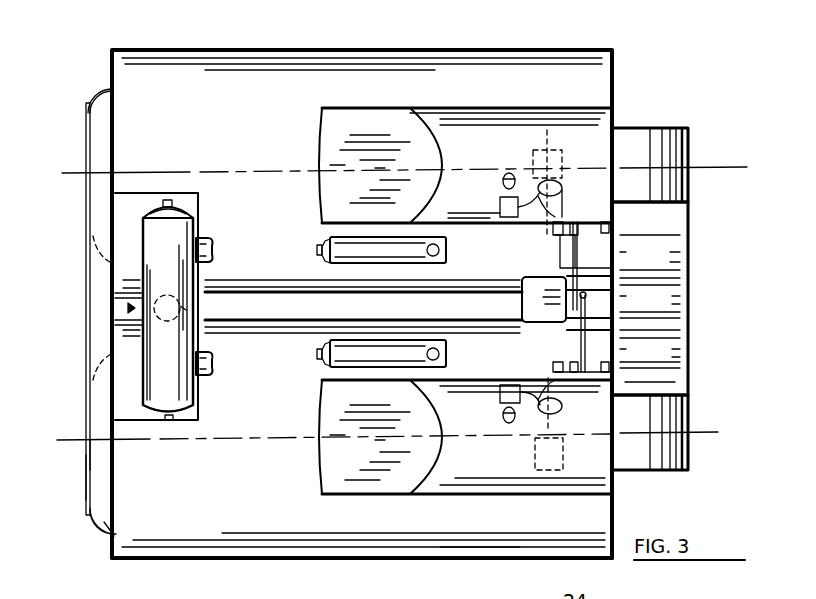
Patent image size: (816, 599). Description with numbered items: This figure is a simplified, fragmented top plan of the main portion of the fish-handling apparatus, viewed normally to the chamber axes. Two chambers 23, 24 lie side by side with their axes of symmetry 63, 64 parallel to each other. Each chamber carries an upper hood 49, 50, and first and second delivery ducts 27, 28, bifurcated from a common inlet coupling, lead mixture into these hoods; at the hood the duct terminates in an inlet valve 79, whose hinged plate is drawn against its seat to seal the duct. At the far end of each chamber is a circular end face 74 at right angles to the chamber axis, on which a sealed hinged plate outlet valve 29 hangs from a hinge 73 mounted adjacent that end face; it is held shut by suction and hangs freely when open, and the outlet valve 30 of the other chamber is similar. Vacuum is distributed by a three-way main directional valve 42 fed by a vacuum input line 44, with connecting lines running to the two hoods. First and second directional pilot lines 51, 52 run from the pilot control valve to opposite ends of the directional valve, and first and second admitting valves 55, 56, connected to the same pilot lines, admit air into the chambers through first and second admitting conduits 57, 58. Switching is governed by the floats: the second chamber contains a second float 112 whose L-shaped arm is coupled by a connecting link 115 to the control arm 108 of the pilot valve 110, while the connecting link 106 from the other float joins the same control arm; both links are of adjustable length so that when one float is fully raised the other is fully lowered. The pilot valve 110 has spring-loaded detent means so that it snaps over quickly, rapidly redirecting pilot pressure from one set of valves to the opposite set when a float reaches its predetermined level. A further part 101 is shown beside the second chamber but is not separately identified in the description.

The first chamber 23 is at (355, 545).
The second chamber 24 is at (319, 62).
The first delivery duct 27 is at (690, 452).
The second delivery duct 28 is at (688, 153).
The first outlet valve 29 is at (88, 468).
The second outlet valve 30 is at (86, 186).
The main directional valve 42 is at (133, 308).
The vacuum input line 44 is at (182, 310).
The first upper hood 49 is at (512, 482).
The second upper hood 50 is at (490, 120).
The first directional pilot line 51 is at (173, 420).
The second directional pilot line 52 is at (168, 200).
The first admitting valve 55 is at (350, 346).
The second admitting valve 56 is at (409, 258).
The first admitting conduit 57 is at (505, 417).
The second admitting conduit 58 is at (503, 182).
The axis of symmetry of first chamber 63 is at (275, 458).
The axis of symmetry of second chamber 64 is at (260, 165).
The hinge 73 is at (90, 453).
The circular end face 74 is at (112, 536).
The inlet valve 79 is at (480, 573).
The lower valve stem 101 is at (553, 425).
The connecting link 106 is at (583, 354).
The control arm 108 is at (583, 297).
The pilot valve 110 is at (528, 310).
The second float 112 is at (508, 128).
The connecting link 115 is at (578, 254).